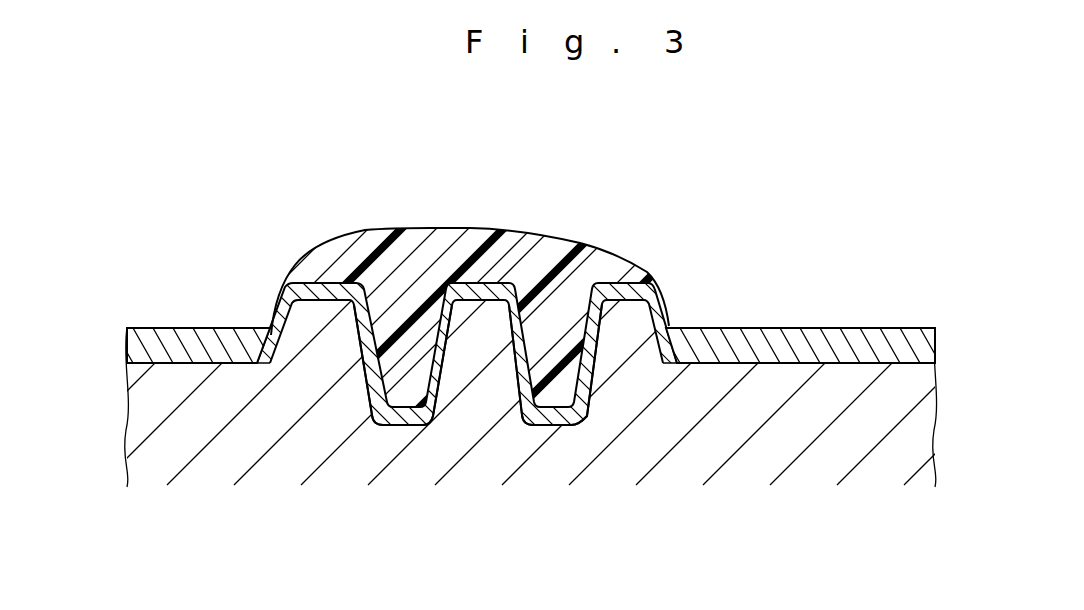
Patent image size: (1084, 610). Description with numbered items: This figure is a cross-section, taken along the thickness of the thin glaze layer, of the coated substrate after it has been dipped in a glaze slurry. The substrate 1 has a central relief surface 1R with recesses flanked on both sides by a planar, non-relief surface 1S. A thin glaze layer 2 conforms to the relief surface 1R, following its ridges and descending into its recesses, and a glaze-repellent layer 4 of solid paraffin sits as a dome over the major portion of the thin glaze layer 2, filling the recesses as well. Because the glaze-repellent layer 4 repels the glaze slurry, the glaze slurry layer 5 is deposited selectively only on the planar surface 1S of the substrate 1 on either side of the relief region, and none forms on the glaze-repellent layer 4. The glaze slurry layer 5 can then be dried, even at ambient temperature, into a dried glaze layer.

The substrate 1 is at (746, 452).
The planar surface 1S is at (170, 364).
The relief surface 1R is at (371, 365).
The thin glaze layer 2 is at (605, 375).
The glaze-repellent layer 4 is at (459, 238).
The glaze slurry layer 5 is at (192, 338).